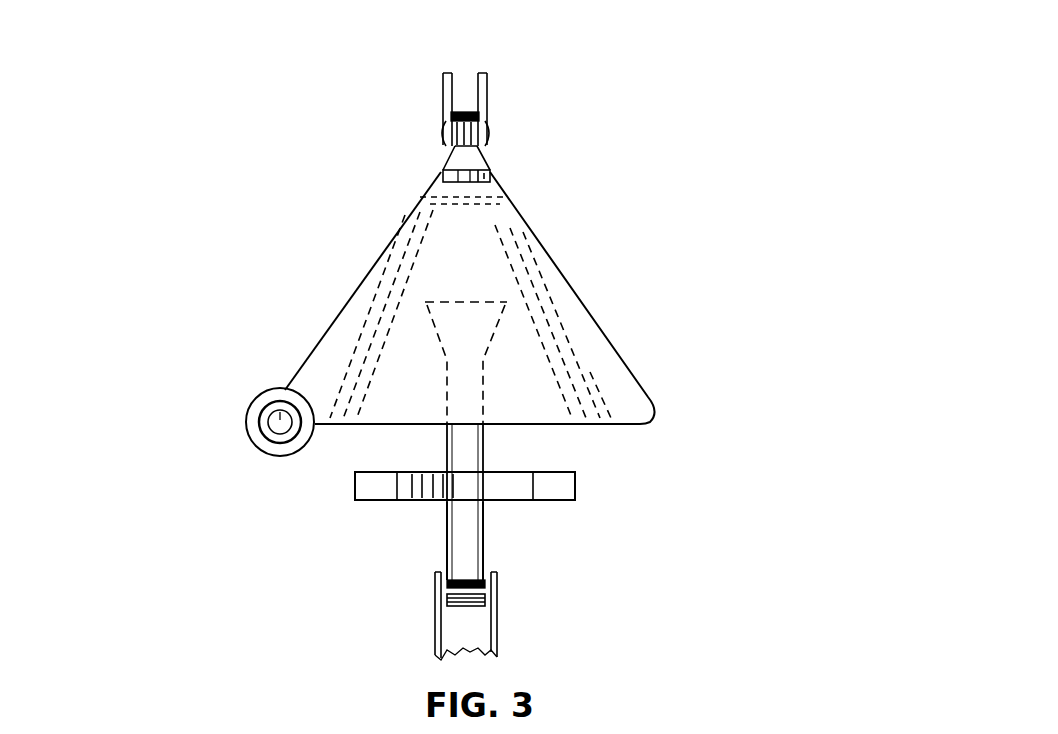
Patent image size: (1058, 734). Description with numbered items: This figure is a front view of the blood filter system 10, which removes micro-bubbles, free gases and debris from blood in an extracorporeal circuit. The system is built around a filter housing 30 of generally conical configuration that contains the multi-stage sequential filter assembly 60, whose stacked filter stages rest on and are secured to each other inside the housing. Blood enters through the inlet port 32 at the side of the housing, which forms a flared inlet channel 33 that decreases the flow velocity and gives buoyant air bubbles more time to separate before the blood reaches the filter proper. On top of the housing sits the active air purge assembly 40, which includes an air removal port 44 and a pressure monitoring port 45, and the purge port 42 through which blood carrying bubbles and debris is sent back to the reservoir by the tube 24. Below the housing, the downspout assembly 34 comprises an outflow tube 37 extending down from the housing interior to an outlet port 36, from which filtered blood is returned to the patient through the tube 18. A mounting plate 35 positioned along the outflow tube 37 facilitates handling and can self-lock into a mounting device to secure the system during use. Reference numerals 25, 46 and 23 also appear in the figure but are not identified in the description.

The blood filter system 10 is at (208, 114).
The tube 24 is at (547, 91).
The upper conduit outlet 25 is at (473, 73).
The purge port 42 is at (478, 113).
The collar 46 is at (448, 140).
The air removal port 44 is at (443, 176).
The pressure monitoring port 45 is at (488, 180).
The active air purge assembly 40 is at (496, 189).
The filter housing 30 is at (383, 250).
The multi-stage sequential filter assembly 60 is at (582, 348).
The inlet port 32 is at (262, 393).
The inlet channel 33 is at (282, 457).
The downspout assembly 34 is at (505, 446).
The mounting plate 35 is at (375, 503).
The outflow tube 37 is at (446, 532).
The outlet port 36 is at (455, 618).
The tube 18 is at (550, 616).
The lower conduit inlet 23 is at (495, 640).